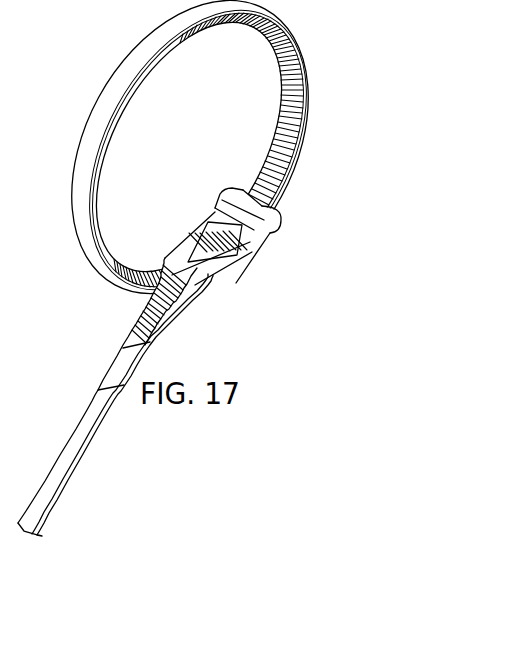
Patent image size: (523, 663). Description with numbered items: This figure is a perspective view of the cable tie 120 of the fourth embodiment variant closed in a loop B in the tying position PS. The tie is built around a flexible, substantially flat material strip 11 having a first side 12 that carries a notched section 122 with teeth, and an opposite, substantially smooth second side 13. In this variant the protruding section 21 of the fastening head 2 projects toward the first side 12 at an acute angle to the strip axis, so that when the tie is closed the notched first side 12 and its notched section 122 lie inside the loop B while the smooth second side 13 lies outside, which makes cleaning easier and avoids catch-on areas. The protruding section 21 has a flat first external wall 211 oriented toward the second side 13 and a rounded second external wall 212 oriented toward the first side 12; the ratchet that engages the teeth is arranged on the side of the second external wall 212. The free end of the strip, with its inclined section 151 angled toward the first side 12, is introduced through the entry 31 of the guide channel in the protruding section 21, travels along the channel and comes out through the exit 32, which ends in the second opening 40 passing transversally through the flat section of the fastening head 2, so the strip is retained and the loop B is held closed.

The material strip 11 is at (198, 167).
The cable tie 120 is at (82, 102).
The second side 13 is at (140, 63).
The notched section 122 is at (277, 118).
The first side 12 is at (290, 150).
The loop B is at (263, 23).
The tying position PS is at (343, 58).
The fastening head 2 is at (255, 243).
The protruding section 21 is at (265, 225).
The first external wall 211 is at (260, 243).
The second external wall 212 is at (220, 190).
The entry 31 is at (272, 197).
The exit 32 is at (236, 264).
The second opening 40 is at (208, 270).
The inclined section 151 is at (139, 403).